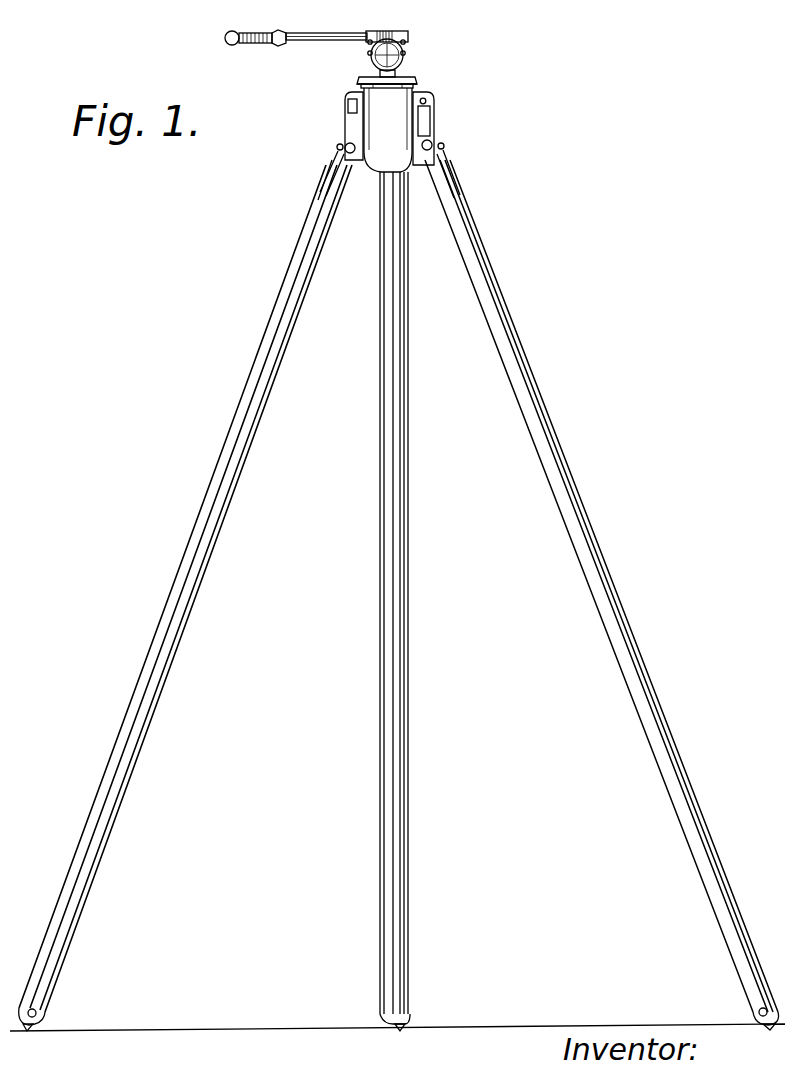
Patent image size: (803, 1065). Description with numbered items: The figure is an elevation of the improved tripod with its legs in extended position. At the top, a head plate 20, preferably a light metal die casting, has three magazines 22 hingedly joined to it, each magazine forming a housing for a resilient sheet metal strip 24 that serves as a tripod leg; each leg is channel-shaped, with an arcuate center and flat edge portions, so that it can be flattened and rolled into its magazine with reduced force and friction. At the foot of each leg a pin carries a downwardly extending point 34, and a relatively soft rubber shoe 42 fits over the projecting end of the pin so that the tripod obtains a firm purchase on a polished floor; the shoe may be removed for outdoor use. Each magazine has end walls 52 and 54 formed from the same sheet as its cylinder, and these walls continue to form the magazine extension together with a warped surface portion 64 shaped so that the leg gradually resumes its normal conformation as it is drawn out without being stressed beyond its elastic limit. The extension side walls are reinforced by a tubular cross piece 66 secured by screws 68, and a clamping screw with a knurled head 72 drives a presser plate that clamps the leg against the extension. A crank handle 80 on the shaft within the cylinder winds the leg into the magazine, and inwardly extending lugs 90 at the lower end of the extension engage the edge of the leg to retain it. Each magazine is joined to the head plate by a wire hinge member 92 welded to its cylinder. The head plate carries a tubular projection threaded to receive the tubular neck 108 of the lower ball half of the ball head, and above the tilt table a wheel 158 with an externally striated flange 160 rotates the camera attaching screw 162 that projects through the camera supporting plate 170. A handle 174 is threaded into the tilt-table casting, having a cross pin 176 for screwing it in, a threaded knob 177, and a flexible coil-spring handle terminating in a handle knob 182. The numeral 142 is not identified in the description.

The head plate 20 is at (420, 80).
The magazine 22 is at (420, 106).
The resilient sheet metal strip 24 is at (170, 660).
The point 34 is at (30, 1030).
The rubber shoe 42 is at (39, 1012).
The end wall 52 is at (436, 126).
The end wall 54 is at (346, 126).
The warped surface portion 64 is at (334, 156).
The tubular cross piece 66 is at (345, 149).
The screw 68 is at (433, 148).
The knurled head 72 is at (450, 165).
The crank handle 80 is at (349, 104).
The lug 90 is at (328, 176).
The wire hinge member 92 is at (359, 84).
The tubular neck 108 is at (389, 66).
The ball stem 142 is at (404, 62).
The wheel 158 is at (368, 33).
The externally striated flange 160 is at (412, 47).
The camera attaching screw 162 is at (400, 31).
The camera supporting plate 170 is at (391, 31).
The handle 174 is at (331, 47).
The cross pin 176 is at (277, 43).
The knob 177 is at (275, 33).
The handle knob 182 is at (225, 37).